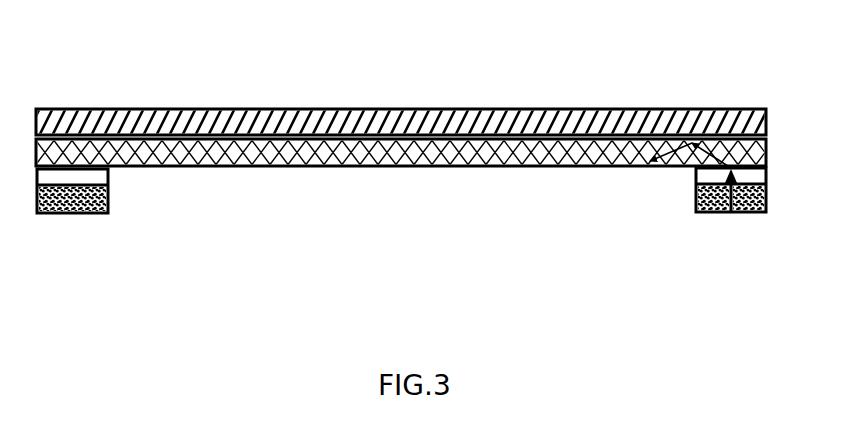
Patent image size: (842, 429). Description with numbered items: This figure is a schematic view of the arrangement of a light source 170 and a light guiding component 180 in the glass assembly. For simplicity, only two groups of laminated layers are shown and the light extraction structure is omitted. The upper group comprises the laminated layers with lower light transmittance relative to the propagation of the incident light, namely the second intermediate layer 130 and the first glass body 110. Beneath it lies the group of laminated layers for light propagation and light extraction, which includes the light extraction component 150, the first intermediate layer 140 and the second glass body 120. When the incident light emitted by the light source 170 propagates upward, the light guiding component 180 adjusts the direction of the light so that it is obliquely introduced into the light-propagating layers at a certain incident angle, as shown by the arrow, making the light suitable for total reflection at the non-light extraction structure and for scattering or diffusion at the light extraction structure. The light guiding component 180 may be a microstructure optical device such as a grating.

The first glass body 110 is at (403, 80).
The second intermediate layer 130 is at (119, 110).
The second glass body 120 is at (405, 183).
The first intermediate layer 140 is at (405, 183).
The light extraction component 150 is at (322, 152).
The light source 170 is at (107, 200).
The light guiding component 180 is at (107, 181).